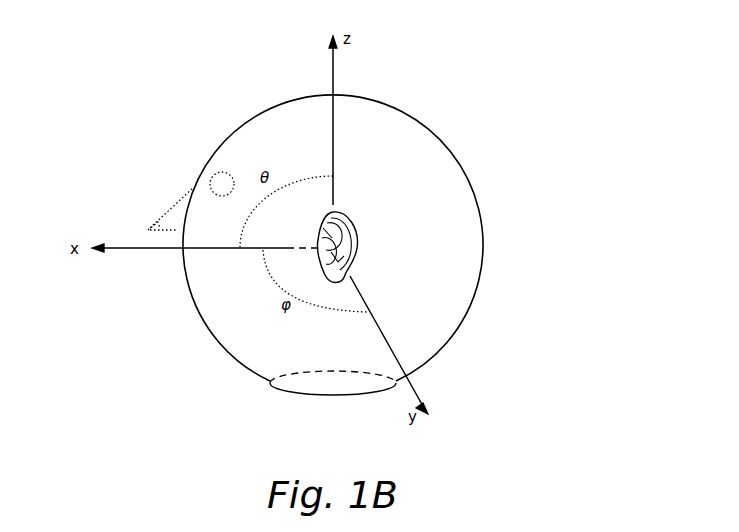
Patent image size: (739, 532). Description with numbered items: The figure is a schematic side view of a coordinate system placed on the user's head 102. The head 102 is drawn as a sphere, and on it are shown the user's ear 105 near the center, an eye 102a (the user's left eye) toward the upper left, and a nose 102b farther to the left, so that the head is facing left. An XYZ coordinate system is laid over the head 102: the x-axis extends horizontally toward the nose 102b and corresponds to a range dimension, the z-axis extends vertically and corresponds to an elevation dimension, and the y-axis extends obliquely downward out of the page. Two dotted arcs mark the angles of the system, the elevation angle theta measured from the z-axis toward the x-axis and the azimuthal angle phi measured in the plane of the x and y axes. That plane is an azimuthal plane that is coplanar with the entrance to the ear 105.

The user's head 102 is at (403, 102).
The eye 102a is at (210, 185).
The nose 102b is at (152, 225).
The ear 105 is at (358, 230).